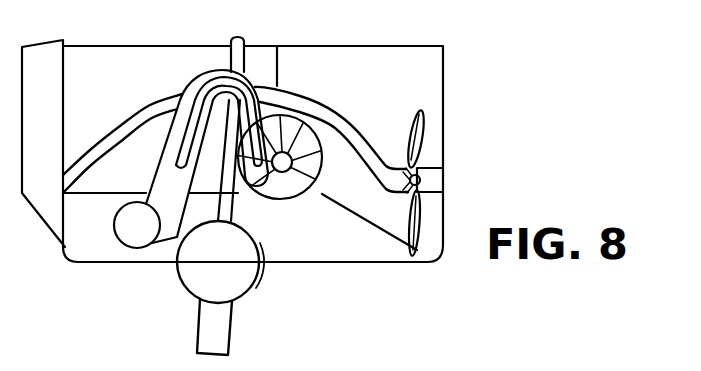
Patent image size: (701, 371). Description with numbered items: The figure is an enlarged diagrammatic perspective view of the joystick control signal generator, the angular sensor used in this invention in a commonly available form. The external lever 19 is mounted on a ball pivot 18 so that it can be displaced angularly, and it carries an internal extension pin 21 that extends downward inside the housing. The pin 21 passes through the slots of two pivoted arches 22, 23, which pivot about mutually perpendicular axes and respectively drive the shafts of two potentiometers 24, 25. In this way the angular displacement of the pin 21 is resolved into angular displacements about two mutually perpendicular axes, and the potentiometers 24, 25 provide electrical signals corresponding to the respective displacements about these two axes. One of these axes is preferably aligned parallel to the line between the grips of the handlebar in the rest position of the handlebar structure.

The ball pivot 18 is at (250, 290).
The external lever 19 is at (232, 337).
The internal extension pin 21 is at (233, 38).
The pivoted arch 22 is at (145, 107).
The pivoted arch 23 is at (163, 154).
The potentiometer 24 is at (431, 140).
The potentiometer 25 is at (308, 165).